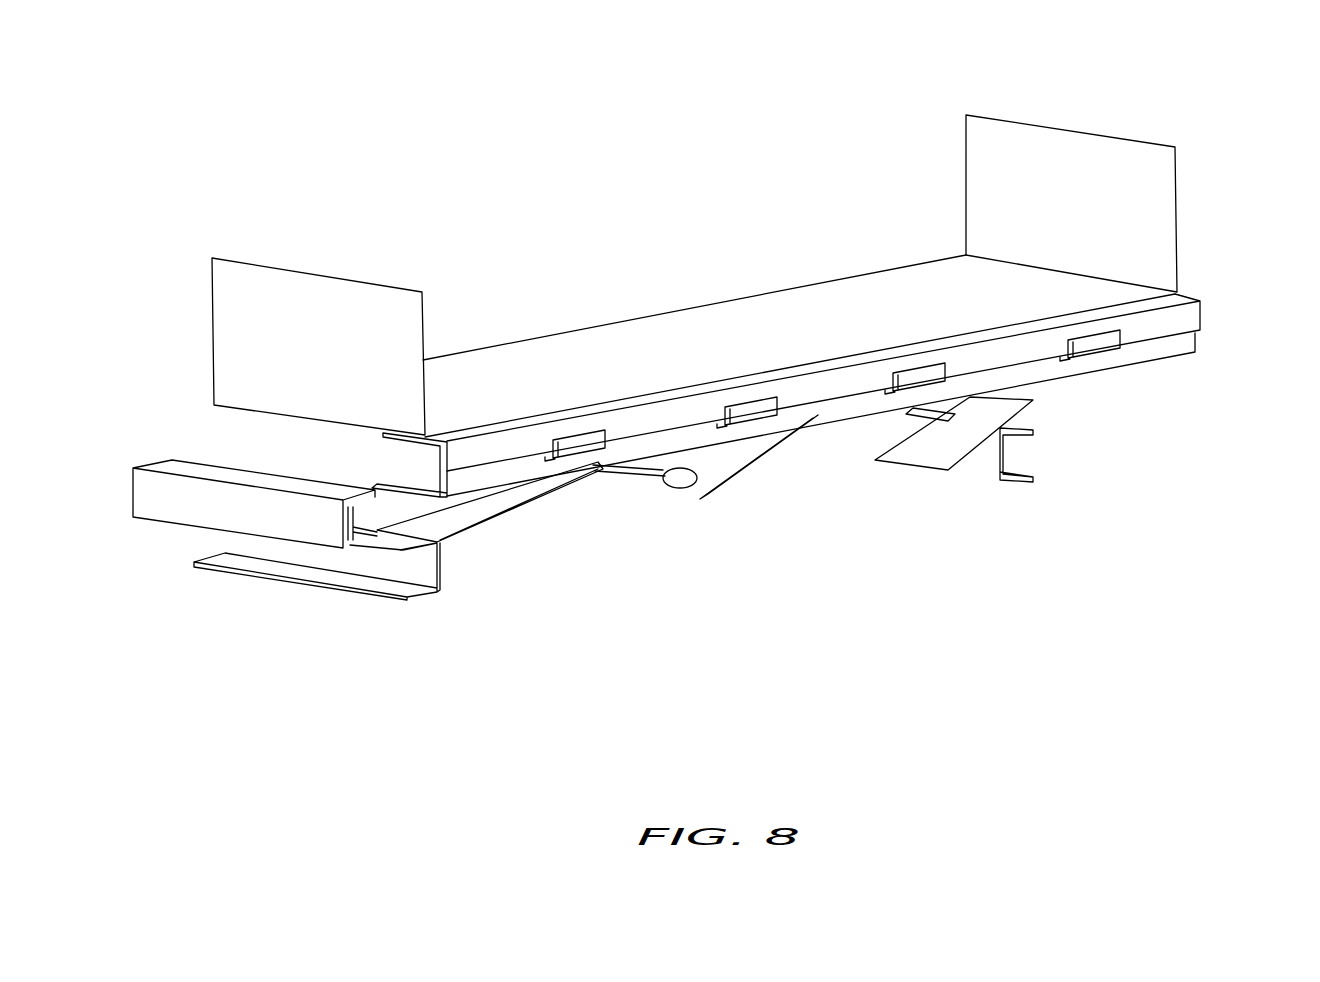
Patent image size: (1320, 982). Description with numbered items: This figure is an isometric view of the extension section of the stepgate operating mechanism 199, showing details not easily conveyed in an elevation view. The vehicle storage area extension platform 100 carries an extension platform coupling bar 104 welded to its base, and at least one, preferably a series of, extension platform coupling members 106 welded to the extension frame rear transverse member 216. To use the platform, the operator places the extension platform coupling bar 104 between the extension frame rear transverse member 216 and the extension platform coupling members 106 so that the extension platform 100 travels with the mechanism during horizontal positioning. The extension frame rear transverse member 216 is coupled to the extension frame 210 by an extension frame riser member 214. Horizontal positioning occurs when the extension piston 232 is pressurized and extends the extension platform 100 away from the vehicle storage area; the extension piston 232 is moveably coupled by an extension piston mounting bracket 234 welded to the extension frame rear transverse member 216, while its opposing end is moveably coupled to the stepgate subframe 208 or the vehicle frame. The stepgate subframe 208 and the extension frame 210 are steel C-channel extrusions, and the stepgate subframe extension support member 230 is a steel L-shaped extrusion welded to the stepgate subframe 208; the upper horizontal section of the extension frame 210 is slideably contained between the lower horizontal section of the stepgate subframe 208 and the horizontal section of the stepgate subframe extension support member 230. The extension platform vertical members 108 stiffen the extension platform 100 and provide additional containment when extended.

The extension platform 100 is at (722, 306).
The extension platform coupling bar 104 is at (1200, 303).
The extension platform coupling member 106 is at (593, 452).
The extension platform vertical member 108 is at (277, 313).
The stepgate operating mechanism 199 is at (223, 701).
The stepgate subframe 208 is at (250, 503).
The extension frame 210 is at (332, 560).
The extension frame riser member 214 is at (457, 512).
The extension frame rear transverse member 216 is at (1175, 345).
The stepgate subframe extension support member 230 is at (350, 527).
The extension piston 232 is at (645, 473).
The extension piston mounting bracket 234 is at (745, 457).